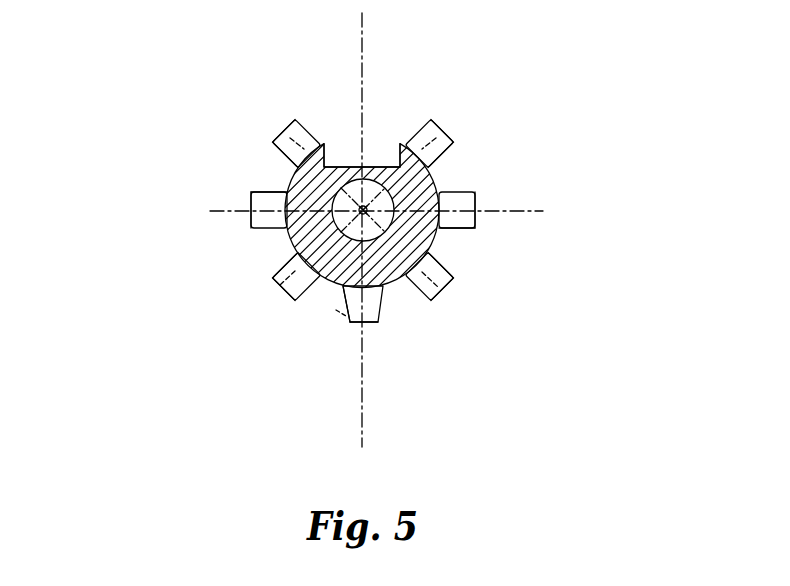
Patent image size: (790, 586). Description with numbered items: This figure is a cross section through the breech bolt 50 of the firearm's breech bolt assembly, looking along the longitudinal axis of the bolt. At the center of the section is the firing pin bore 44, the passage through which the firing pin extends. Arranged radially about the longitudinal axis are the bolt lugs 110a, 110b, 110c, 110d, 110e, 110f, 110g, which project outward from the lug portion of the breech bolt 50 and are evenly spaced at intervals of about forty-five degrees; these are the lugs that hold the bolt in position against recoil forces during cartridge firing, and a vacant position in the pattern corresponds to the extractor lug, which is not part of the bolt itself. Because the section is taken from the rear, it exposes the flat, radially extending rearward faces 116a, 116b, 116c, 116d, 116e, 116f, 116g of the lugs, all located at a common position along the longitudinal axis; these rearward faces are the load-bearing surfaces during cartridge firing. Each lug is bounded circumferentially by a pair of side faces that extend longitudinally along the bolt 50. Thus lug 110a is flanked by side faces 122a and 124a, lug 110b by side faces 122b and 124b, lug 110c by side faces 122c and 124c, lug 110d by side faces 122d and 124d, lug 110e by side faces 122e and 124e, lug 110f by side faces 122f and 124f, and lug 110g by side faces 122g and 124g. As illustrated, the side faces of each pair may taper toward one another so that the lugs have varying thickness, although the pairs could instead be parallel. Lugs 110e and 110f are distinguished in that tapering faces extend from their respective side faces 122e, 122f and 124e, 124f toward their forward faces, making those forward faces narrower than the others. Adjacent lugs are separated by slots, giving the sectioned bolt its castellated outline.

The firing pin bore 44 is at (363, 206).
The breech bolt 50 is at (348, 166).
The bolt lug 110a is at (273, 143).
The bolt lug 110b is at (253, 227).
The bolt lug 110c is at (306, 290).
The bolt lug 110d is at (378, 322).
The bolt lug 110e is at (450, 282).
The bolt lug 110f is at (473, 226).
The bolt lug 110g is at (451, 143).
The rearward face 116a is at (302, 135).
The rearward face 116b is at (282, 220).
The rearward face 116c is at (293, 273).
The rearward face 116d is at (340, 313).
The rearward face 116e is at (475, 323).
The rearward face 116f is at (443, 237).
The rearward face 116g is at (425, 136).
The circumferential side face 122a is at (308, 133).
The circumferential side face 122b is at (265, 192).
The circumferential side face 122c is at (278, 282).
The circumferential side face 122d is at (318, 296).
The circumferential side face 122e is at (420, 345).
The circumferential side face 122f is at (443, 238).
The circumferential side face 122g is at (448, 156).
The circumferential side face 124a is at (280, 155).
The circumferential side face 124b is at (282, 245).
The circumferential side face 124c is at (296, 300).
The circumferential side face 124d is at (412, 296).
The circumferential side face 124e is at (455, 275).
The circumferential side face 124f is at (450, 191).
The circumferential side face 124g is at (410, 127).